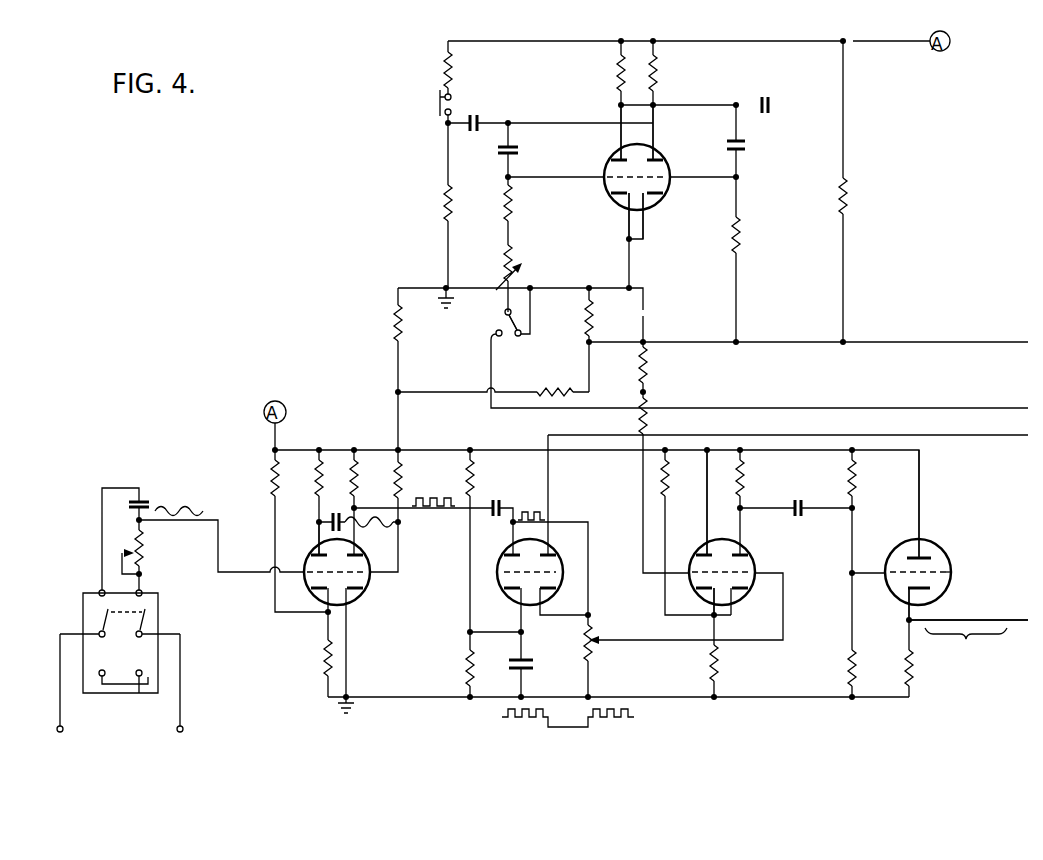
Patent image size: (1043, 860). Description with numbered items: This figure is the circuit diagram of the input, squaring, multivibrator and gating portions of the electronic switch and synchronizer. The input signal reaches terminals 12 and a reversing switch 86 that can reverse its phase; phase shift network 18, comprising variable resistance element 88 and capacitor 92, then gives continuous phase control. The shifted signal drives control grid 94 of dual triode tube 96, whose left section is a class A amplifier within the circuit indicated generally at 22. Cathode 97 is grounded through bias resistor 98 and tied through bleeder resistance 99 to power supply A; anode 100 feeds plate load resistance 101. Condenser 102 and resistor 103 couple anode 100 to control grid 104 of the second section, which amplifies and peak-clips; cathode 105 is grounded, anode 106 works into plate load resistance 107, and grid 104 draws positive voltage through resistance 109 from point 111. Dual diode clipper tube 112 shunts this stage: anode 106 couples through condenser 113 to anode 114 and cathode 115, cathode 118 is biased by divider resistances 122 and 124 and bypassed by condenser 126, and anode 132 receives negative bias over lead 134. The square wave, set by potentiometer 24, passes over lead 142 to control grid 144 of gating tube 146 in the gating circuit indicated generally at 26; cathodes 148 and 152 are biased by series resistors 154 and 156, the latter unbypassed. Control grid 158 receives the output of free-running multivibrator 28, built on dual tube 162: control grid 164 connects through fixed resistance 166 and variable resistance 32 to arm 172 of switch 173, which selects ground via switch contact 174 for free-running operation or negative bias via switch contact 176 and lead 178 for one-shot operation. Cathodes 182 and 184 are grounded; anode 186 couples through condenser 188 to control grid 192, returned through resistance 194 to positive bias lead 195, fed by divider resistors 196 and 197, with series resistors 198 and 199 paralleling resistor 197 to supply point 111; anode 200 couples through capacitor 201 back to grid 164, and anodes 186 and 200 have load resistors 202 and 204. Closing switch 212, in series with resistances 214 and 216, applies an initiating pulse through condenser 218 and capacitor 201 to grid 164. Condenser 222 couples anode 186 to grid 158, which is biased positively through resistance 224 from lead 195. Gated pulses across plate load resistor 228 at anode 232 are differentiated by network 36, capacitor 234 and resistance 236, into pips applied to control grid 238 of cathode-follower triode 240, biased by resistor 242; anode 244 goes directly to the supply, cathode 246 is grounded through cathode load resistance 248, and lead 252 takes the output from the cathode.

The terminals 12 is at (172, 720).
The phase shift network 18 is at (138, 635).
The first tube 22 is at (358, 581).
The potentiometer 24 is at (596, 631).
The tube 26 is at (724, 588).
The free-running multivibrator 28 is at (644, 195).
The variable resistance 32 is at (504, 262).
The differentiating network 36 is at (828, 594).
The reversing switch 86 is at (100, 613).
The variable resistance element 88 is at (146, 559).
The capacitor 92 is at (142, 497).
The control grid 94 is at (309, 566).
The dual triode vacuum tube 96 is at (310, 589).
The cathode 97 is at (326, 600).
The bias resistor 98 is at (320, 666).
The bleeder resistance 99 is at (270, 480).
The anode 100 is at (313, 546).
The plate load resistance 101 is at (314, 487).
The condenser 102 is at (335, 514).
The resistor 103 is at (401, 529).
The control grid 104 is at (361, 576).
The cathode 105 is at (348, 601).
The anode 106 is at (358, 553).
The plate load resistance 107 is at (358, 489).
The resistance 109 is at (404, 479).
The point 111 is at (396, 392).
The dual diode clipper tube 112 is at (490, 586).
The condenser 113 is at (498, 500).
The anode 114 is at (507, 550).
The cathode 115 is at (552, 595).
The cathode 118 is at (500, 610).
The resistance 122 is at (478, 481).
The resistance 124 is at (466, 668).
The condenser 126 is at (526, 658).
The anode 132 is at (548, 549).
The lead 134 is at (996, 440).
The lead 142 is at (656, 643).
The control grid 144 is at (755, 569).
The dual triode tube 146 is at (744, 551).
The cathode 148 is at (707, 598).
The cathode 152 is at (741, 593).
The resistor 154 is at (668, 481).
The resistor 156 is at (720, 664).
The control grid 158 is at (701, 557).
The dual vacuum tube 162 is at (667, 160).
The control grid 164 is at (609, 168).
The fixed resistance 166 is at (511, 210).
The arm 172 is at (503, 316).
The single pole, double throw switch 173 is at (505, 343).
The switch contact 174 is at (522, 335).
The switch contact 176 is at (496, 335).
The lead 178 is at (992, 408).
The cathode 182 is at (617, 198).
The cathode 184 is at (662, 200).
The anode 186 is at (617, 153).
The condenser 188 is at (742, 145).
The control grid 192 is at (672, 173).
The resistance 194 is at (739, 231).
The lead 195 is at (991, 342).
The resistor 196 is at (847, 197).
The resistor 197 is at (593, 323).
The resistor 198 is at (554, 390).
The resistor 199 is at (392, 330).
The anode 200 is at (653, 150).
The capacitor 201 is at (512, 152).
The load resistor 202 is at (617, 78).
The load resistor 204 is at (656, 75).
The switch 212 is at (452, 110).
The resistance 214 is at (452, 76).
The resistance 216 is at (443, 201).
The condenser 218 is at (482, 121).
The condenser 222 is at (764, 97).
The resistor 224 is at (650, 370).
The plate load resistor 228 is at (744, 488).
The anode 232 is at (722, 502).
The capacitor 234 is at (796, 520).
The resistance 236 is at (845, 669).
The control grid 238 is at (893, 571).
The triode vacuum tube 240 is at (948, 563).
The resistor 242 is at (857, 483).
The anode 244 is at (922, 550).
The cathode 246 is at (930, 608).
The cathode load resistance 248 is at (914, 667).
The lead 252 is at (1005, 618).